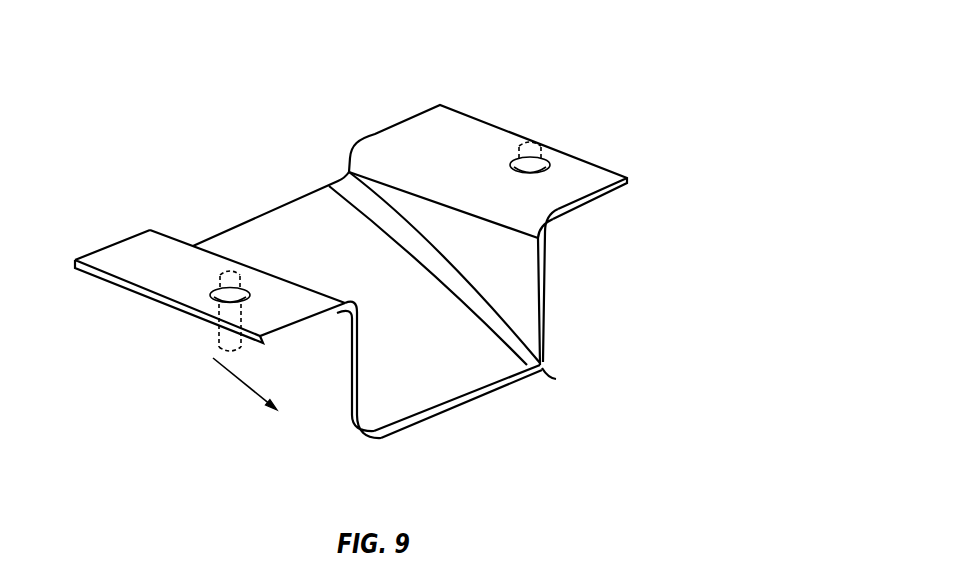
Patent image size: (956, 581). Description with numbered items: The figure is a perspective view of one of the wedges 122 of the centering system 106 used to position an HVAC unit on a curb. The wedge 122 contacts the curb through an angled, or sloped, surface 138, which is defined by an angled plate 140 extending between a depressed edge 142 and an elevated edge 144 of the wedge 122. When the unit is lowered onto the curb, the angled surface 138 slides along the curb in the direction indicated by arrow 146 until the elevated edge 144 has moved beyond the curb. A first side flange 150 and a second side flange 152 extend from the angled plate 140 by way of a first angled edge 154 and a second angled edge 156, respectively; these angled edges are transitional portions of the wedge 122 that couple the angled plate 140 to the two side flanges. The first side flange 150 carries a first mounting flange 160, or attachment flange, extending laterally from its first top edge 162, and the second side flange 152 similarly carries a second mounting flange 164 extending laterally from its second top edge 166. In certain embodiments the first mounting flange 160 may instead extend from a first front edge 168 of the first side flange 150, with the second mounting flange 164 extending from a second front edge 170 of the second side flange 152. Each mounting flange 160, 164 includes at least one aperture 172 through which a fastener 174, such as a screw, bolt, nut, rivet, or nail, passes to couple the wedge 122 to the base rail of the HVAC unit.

The centering system 106 is at (516, 46).
The wedge 122 is at (558, 85).
The angled surface 138 is at (444, 423).
The angled plate 140 is at (544, 373).
The depressed edge 142 is at (483, 403).
The elevated edge 144 is at (253, 214).
The arrow 146 is at (240, 387).
The first side flange 150 is at (344, 388).
The second side flange 152 is at (524, 282).
The first angled edge 154 is at (362, 438).
The second angled edge 156 is at (516, 325).
The first mounting flange 160 is at (138, 270).
The first top edge 162 is at (252, 264).
The second mounting flange 164 is at (453, 126).
The second top edge 166 is at (519, 226).
The first front edge 168 is at (347, 350).
The second front edge 170 is at (547, 262).
The aperture 172 is at (212, 297).
The fastener 174 is at (218, 333).